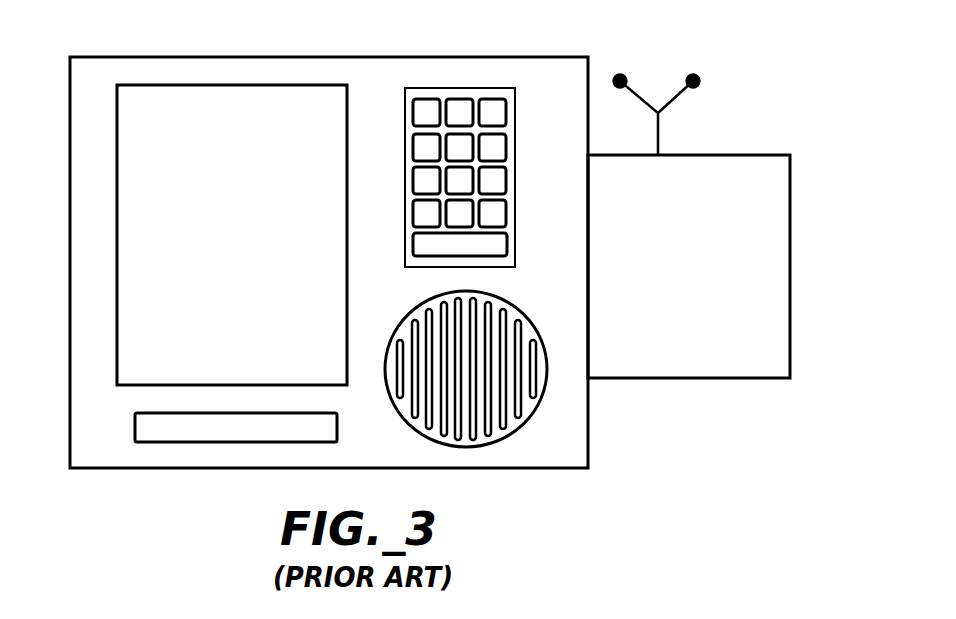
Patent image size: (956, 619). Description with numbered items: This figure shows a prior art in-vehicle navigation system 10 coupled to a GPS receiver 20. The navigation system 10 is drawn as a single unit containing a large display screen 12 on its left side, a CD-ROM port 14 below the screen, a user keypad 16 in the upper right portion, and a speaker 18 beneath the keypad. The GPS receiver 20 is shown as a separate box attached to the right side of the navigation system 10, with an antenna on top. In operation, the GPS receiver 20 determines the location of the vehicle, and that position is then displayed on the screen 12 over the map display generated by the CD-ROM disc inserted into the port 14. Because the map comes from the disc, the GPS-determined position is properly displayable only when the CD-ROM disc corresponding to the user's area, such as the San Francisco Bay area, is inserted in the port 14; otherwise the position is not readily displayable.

The prior art in-vehicle navigation system 10 is at (478, 57).
The display screen 12 is at (347, 130).
The CD-ROM port 14 is at (337, 432).
The user keypad 16 is at (515, 140).
The speaker 18 is at (505, 300).
The GPS receiver 20 is at (694, 152).